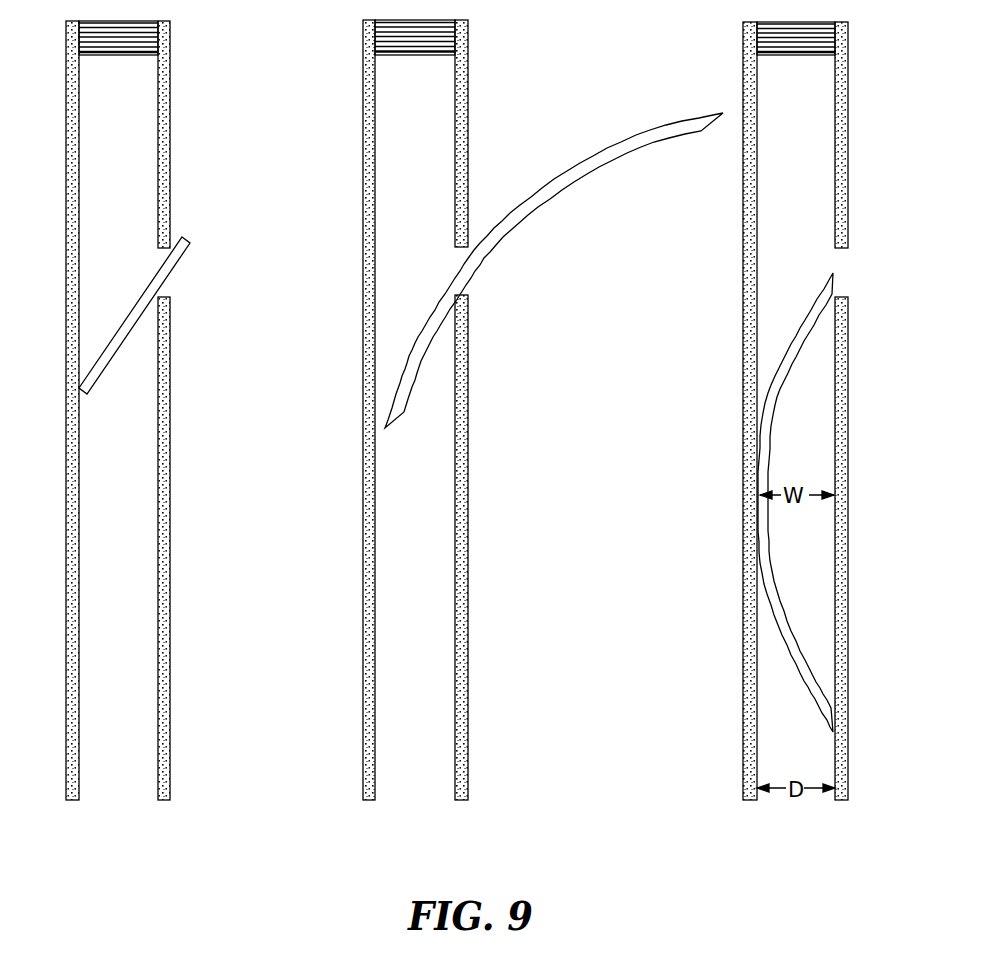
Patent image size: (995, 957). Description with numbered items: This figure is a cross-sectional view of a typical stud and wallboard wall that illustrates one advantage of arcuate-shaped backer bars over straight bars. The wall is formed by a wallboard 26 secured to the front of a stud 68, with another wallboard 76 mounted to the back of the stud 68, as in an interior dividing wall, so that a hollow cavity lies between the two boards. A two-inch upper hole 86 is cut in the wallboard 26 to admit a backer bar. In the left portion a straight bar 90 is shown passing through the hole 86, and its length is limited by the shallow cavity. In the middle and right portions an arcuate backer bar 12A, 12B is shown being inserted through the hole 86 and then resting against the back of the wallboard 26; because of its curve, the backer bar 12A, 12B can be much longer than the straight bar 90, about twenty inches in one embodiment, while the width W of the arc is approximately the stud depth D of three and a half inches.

The stud 68 is at (93, 57).
The wallboard 26 is at (167, 132).
The wallboard 76 is at (67, 153).
The straight bar 90 is at (190, 250).
The upper hole 86 is at (184, 285).
The backer bar 12A is at (609, 422).
The backer bar 12B is at (523, 212).